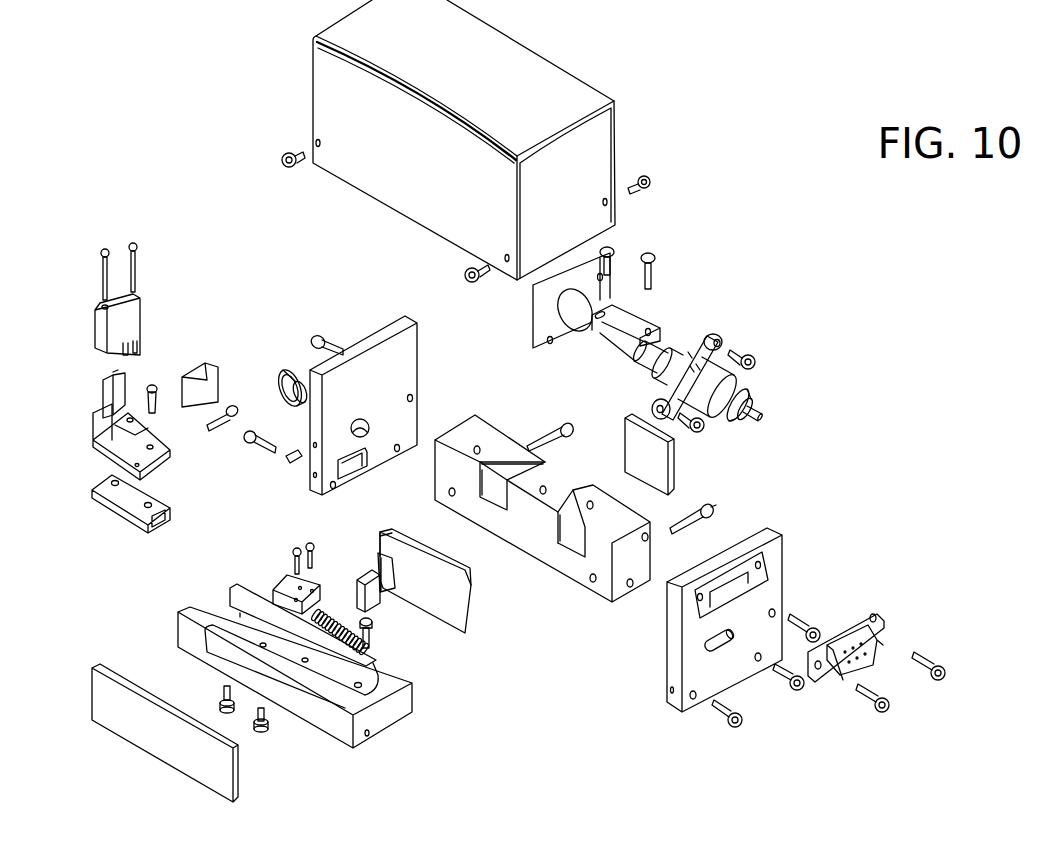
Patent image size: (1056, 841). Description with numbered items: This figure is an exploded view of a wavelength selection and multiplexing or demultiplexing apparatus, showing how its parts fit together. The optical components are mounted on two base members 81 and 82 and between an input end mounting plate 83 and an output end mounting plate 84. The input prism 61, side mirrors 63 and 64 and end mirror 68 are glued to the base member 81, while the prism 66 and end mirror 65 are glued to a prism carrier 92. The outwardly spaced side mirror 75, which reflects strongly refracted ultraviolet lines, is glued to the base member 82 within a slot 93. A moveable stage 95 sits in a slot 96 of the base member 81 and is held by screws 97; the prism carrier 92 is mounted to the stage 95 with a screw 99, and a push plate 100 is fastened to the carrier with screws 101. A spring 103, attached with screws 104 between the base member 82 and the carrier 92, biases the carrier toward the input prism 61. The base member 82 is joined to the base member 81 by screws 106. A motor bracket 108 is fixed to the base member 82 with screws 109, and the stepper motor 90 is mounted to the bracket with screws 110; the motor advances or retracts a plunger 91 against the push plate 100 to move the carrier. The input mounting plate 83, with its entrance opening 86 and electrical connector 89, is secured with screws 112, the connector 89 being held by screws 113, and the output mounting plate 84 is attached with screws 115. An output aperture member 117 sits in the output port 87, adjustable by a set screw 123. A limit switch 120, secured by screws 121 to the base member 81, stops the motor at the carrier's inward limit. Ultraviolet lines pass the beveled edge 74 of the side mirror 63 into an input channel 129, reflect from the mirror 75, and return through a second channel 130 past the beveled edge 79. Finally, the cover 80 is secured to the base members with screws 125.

The cover 80 is at (527, 75).
The screws 125 is at (300, 165).
The motor bracket 108 is at (642, 322).
The plunger 91 is at (618, 335).
The stepper motor 90 is at (757, 389).
The screws 109 is at (602, 250).
The screws 110 is at (755, 358).
The outwardly spaced side mirror 75 is at (675, 470).
The screws 106 is at (563, 425).
The output end mounting plate 84 is at (391, 405).
The output port 87 is at (370, 427).
The screws 115 is at (320, 337).
The output aperture member 117 is at (288, 370).
The set screw 123 is at (290, 463).
The base member 82 is at (531, 529).
The slot 93 is at (545, 468).
The second channel 130 is at (488, 485).
The input channel 129 is at (570, 543).
The beveled edge 74 is at (431, 556).
The first side mirror 63 is at (443, 558).
The beveled edge 79 is at (383, 530).
The input prism 61 is at (385, 565).
The end mirror 68 is at (375, 603).
The base member 81 is at (387, 722).
The slot 96 is at (223, 617).
The limit switch 120 is at (288, 580).
The screws 121 is at (292, 553).
The spring 103 is at (323, 617).
The screws 104 is at (233, 408).
The screws 97 is at (220, 698).
The side mirror 64 is at (107, 685).
The push plate 100 is at (140, 315).
The screws 101 is at (100, 265).
The end mirror 65 is at (103, 398).
The screw 99 is at (117, 373).
The prism carrier 92 is at (162, 458).
The moveable stage 95 is at (133, 518).
The prism 66 is at (210, 363).
The input end mounting plate 83 is at (727, 612).
The entrance opening 86 is at (708, 650).
The electrical connector 89 is at (877, 620).
The screws 112 is at (812, 628).
The screws 113 is at (937, 658).